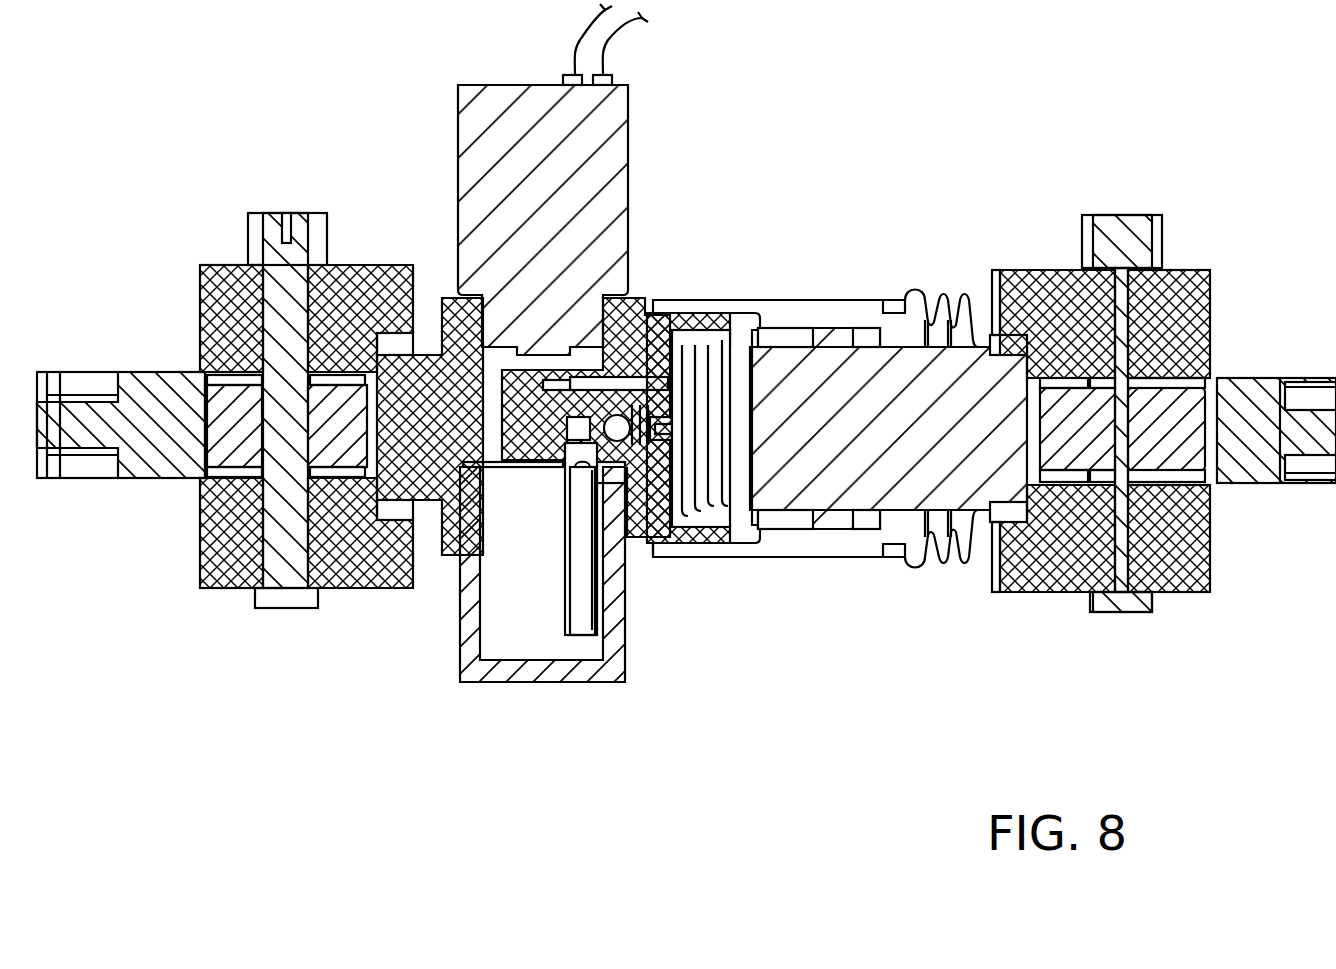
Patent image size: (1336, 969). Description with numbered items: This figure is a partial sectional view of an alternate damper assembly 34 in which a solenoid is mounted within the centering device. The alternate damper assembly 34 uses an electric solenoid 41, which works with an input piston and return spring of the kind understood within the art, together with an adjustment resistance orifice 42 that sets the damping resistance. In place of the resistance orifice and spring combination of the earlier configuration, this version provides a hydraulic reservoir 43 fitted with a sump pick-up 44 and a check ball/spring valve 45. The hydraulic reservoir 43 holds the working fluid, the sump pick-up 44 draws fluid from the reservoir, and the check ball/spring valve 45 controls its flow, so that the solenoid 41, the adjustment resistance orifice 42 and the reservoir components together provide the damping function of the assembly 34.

The alternate damper assembly 34 is at (885, 258).
The electric solenoid 41 is at (617, 148).
The adjustment resistance orifice 42 is at (540, 382).
The hydraulic reservoir 43 is at (518, 640).
The sump pick-up 44 is at (583, 627).
The check ball/spring valve 45 is at (566, 518).